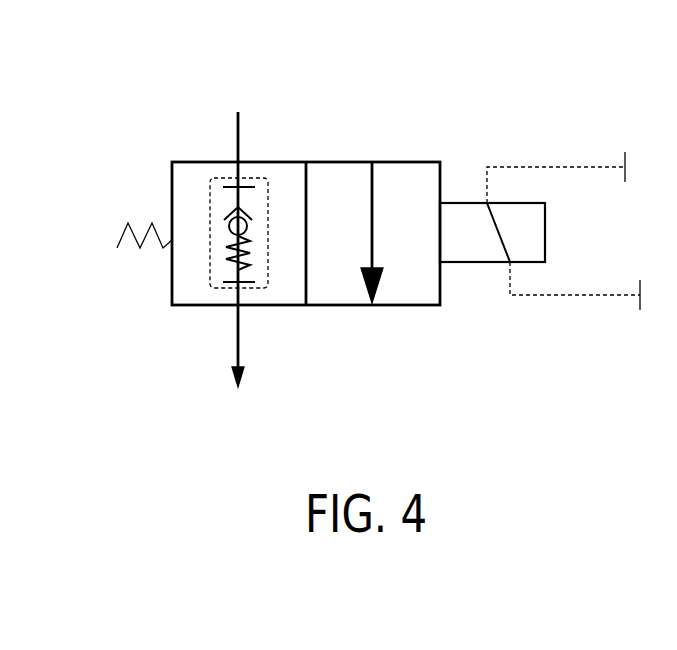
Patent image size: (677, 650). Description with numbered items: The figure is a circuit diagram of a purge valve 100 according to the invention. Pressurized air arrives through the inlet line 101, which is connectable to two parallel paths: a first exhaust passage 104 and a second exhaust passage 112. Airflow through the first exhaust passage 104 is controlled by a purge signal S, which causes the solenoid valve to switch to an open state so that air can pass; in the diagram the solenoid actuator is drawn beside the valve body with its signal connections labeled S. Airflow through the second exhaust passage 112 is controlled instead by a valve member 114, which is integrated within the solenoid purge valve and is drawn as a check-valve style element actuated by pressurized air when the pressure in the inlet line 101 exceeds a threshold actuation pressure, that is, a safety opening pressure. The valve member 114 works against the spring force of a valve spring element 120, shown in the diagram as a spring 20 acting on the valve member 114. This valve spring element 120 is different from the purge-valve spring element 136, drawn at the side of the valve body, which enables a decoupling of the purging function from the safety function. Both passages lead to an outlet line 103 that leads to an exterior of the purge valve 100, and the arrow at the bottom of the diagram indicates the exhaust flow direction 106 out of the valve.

The purge valve 100 is at (127, 97).
The inlet line 101 is at (238, 113).
The first exhaust passage 104 is at (373, 188).
The valve member 114 is at (276, 175).
The valve spring element 120 is at (227, 229).
The spring 20 is at (262, 266).
The purge-valve spring element 136 is at (133, 248).
The second exhaust passage 112 is at (235, 293).
The outlet line 103 is at (240, 328).
The flow direction 106 is at (230, 372).
The purge signal S is at (540, 217).